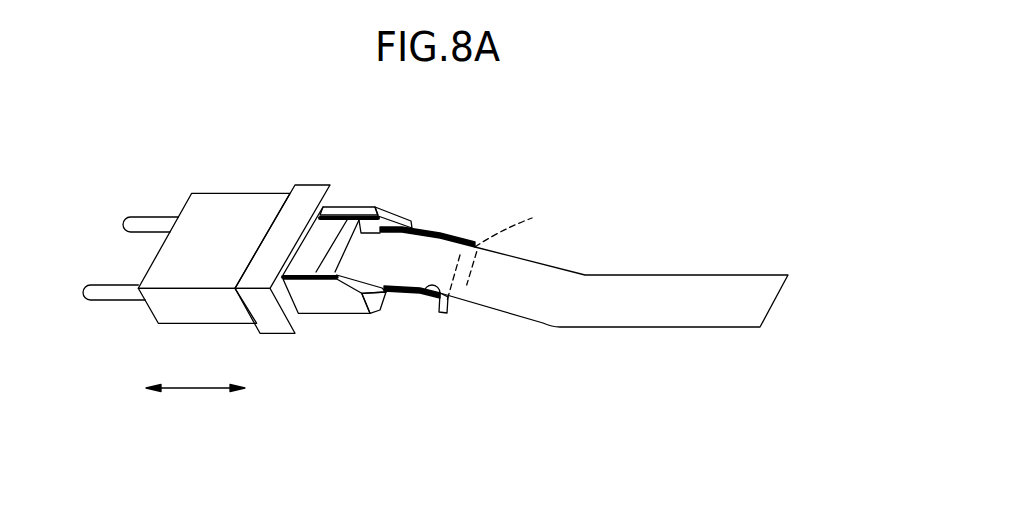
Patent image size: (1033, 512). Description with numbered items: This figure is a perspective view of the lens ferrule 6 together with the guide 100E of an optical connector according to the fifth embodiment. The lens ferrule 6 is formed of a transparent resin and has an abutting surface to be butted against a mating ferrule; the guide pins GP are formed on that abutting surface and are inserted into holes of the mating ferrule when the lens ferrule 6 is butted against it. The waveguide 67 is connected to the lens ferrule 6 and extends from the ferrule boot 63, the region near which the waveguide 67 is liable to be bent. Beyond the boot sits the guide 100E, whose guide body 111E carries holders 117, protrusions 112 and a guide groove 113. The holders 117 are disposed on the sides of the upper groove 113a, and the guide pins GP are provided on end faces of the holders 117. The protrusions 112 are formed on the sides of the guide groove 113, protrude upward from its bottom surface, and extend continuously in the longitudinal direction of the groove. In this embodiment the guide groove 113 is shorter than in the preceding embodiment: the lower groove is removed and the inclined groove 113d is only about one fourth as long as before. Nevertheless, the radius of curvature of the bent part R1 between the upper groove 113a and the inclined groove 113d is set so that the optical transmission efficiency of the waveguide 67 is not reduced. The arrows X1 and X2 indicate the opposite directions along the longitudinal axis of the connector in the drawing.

The lens ferrule 6 is at (237, 198).
The ferrule boot 63 is at (322, 235).
The guide pins GP is at (138, 235).
The guide body 111E is at (400, 295).
The holders 117 is at (355, 207).
The protrusions 112 is at (432, 285).
The guide groove 113 is at (355, 260).
The upper groove 113a is at (382, 272).
The bent part R1 is at (400, 278).
The guide 100E is at (474, 218).
The inclined groove 113d is at (518, 210).
The waveguide 67 is at (565, 287).
The X1 direction X1 is at (263, 390).
The X2 direction X2 is at (125, 390).